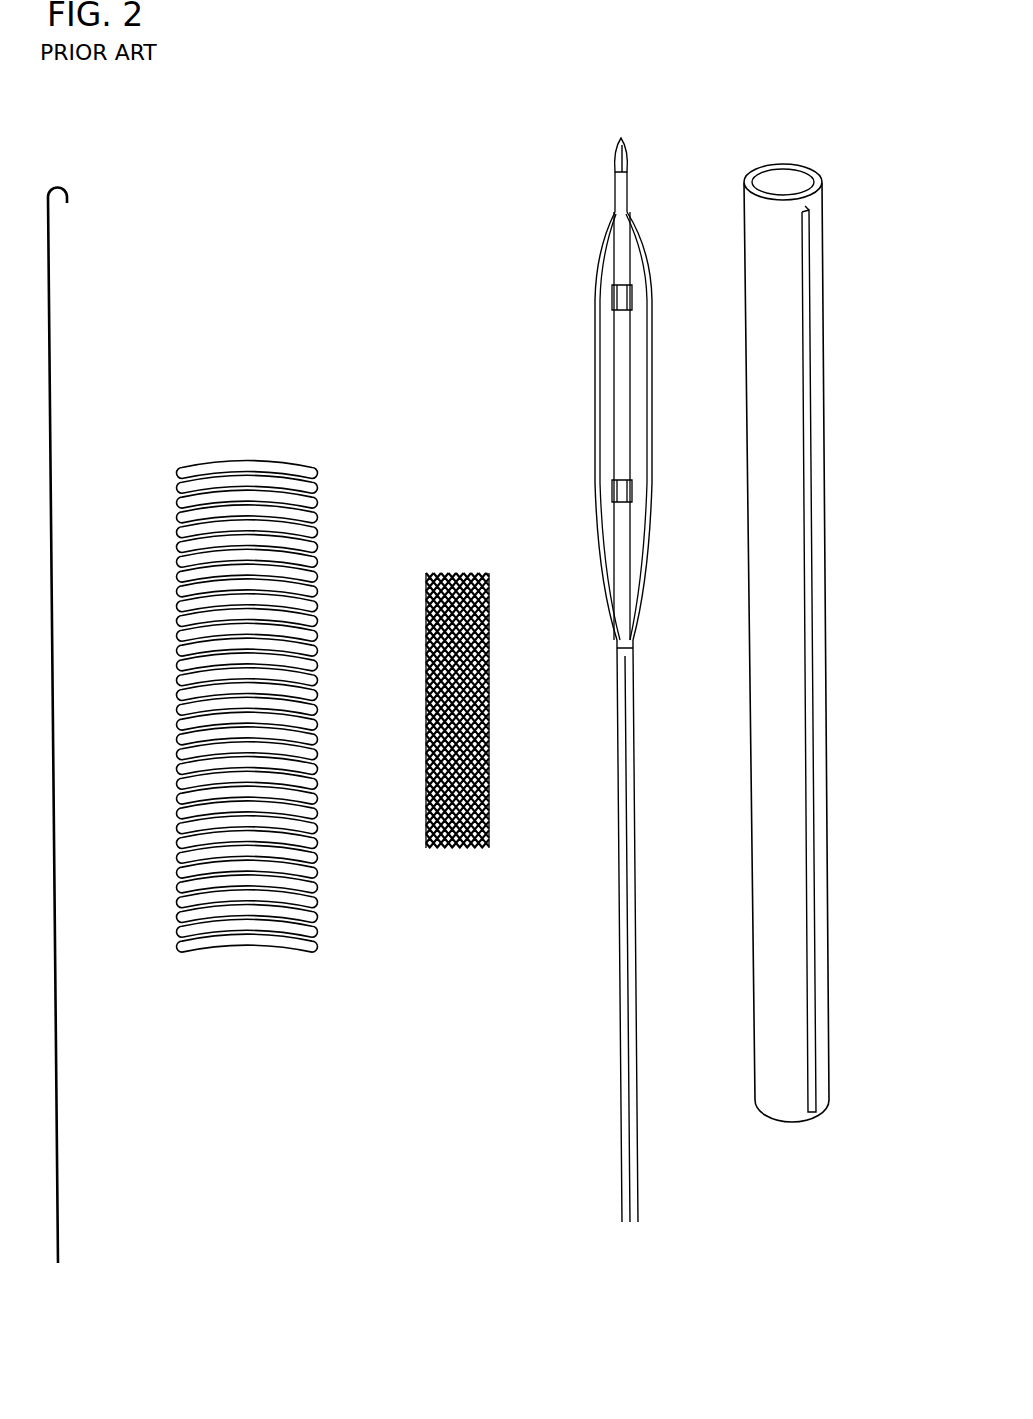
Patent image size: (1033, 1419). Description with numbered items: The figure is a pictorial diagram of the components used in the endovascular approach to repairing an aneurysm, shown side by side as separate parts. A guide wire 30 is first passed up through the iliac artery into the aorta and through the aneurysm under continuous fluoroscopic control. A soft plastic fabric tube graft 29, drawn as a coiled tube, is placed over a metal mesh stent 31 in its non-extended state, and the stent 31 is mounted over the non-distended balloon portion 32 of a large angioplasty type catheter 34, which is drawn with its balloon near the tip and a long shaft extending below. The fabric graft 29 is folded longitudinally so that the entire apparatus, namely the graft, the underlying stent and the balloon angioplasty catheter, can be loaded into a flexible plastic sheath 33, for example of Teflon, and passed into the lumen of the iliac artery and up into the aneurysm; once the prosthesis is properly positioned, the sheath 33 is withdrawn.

The fabric tube graft 29 is at (316, 880).
The guide wire 30 is at (58, 1093).
The metal mesh stent 31 is at (490, 760).
The balloon portion 32 is at (652, 390).
The flexible plastic sheath 33 is at (828, 793).
The angioplasty type catheter 34 is at (636, 788).